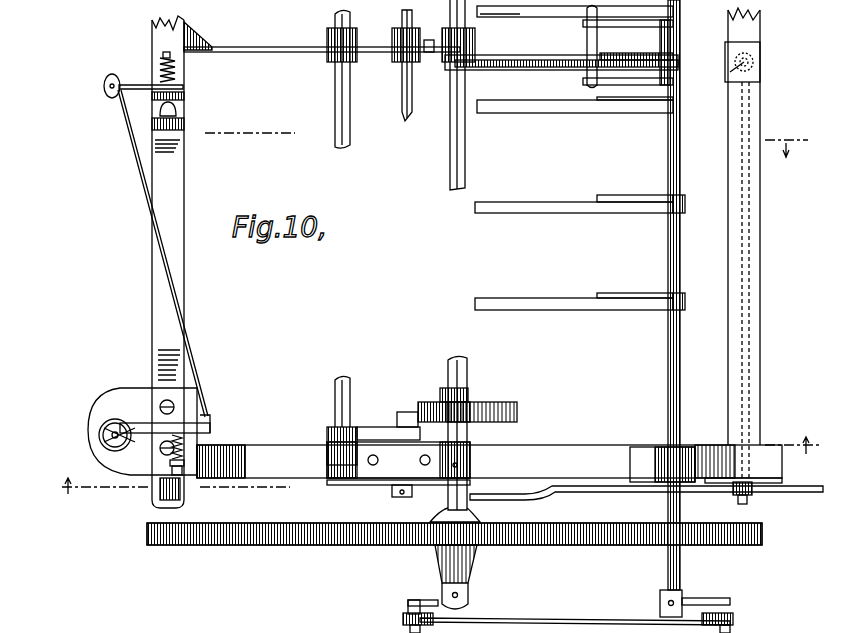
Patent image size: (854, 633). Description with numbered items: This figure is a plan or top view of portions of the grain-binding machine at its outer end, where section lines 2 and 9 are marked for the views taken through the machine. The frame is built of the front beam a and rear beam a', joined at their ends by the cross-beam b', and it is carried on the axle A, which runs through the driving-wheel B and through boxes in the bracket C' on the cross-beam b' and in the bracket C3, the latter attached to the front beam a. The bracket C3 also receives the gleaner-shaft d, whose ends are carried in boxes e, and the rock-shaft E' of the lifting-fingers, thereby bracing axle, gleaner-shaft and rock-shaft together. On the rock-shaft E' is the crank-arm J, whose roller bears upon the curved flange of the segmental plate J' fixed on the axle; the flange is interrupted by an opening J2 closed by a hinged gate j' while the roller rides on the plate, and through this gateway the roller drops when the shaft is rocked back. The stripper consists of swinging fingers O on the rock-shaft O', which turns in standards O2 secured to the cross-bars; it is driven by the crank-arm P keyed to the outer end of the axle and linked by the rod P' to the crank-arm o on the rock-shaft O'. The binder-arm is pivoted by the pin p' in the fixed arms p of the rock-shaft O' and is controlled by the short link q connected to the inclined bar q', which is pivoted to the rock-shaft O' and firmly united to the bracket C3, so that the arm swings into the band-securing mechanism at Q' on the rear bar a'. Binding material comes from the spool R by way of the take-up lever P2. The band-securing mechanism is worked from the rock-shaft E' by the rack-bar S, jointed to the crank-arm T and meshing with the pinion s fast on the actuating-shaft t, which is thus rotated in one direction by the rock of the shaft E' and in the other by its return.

The front beam a is at (168, 262).
The rear beam a' is at (755, 226).
The axle A is at (455, 304).
The driving-wheel B is at (454, 534).
The cross-beam b' is at (489, 464).
The bracket C3 is at (322, 37).
The flanged and webbed bracket C' is at (398, 460).
The shaft d is at (413, 65).
The rock-shaft E' is at (342, 218).
The crank-arm J is at (373, 435).
The gate or hinged section j' is at (415, 417).
The segmental plate J' is at (482, 402).
The opening J2 is at (478, 422).
The swinging fingers O is at (580, 247).
The rock-shaft O' is at (681, 308).
The standards O2 is at (662, 464).
The crank-arm o is at (707, 607).
The crank-arm P is at (420, 607).
The rod P' is at (575, 611).
The take-up lever P2 is at (156, 238).
The fixed arms p is at (628, 61).
The pin p' is at (585, 47).
The link q is at (636, 49).
The inclined bar q' is at (575, 59).
The band-securing mechanism Q' is at (616, 66).
The spool R is at (149, 431).
The rack-bar S is at (646, 498).
The pinion s is at (752, 496).
The crank-arm T is at (377, 488).
The actuating-shaft t is at (749, 420).
The boxes e is at (452, 466).
The section line 2 2 is at (506, 142).
The section line 9 9 is at (433, 466).